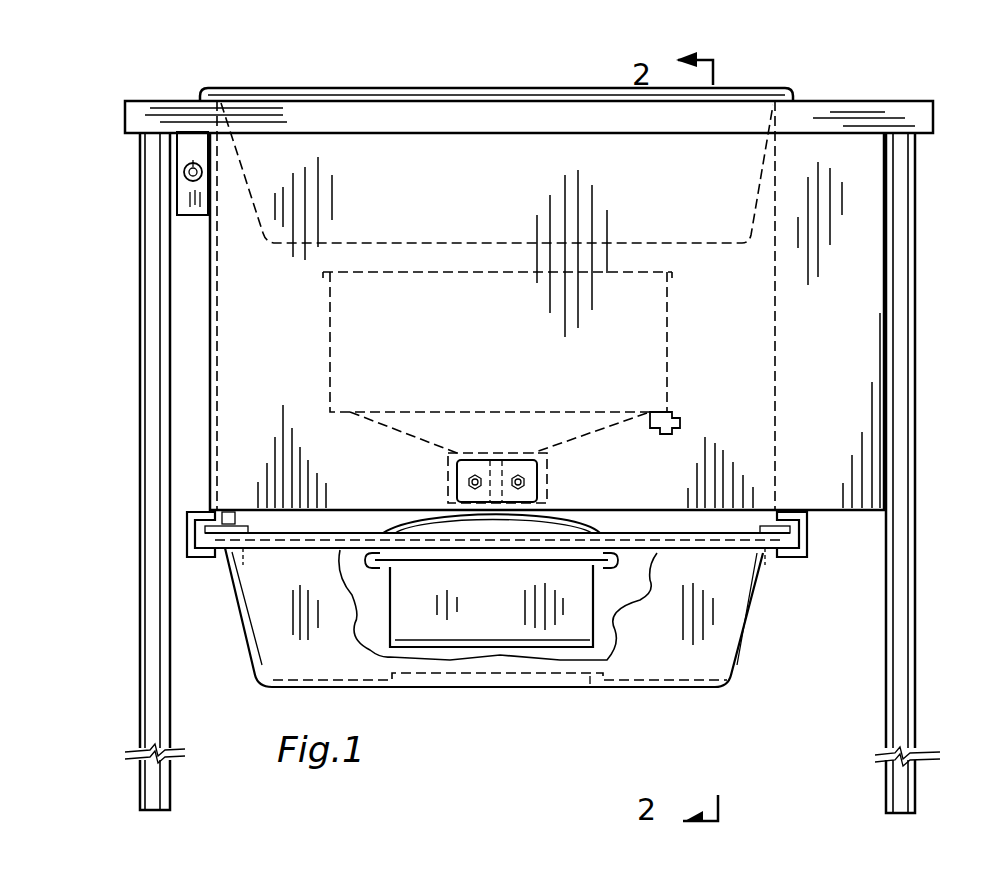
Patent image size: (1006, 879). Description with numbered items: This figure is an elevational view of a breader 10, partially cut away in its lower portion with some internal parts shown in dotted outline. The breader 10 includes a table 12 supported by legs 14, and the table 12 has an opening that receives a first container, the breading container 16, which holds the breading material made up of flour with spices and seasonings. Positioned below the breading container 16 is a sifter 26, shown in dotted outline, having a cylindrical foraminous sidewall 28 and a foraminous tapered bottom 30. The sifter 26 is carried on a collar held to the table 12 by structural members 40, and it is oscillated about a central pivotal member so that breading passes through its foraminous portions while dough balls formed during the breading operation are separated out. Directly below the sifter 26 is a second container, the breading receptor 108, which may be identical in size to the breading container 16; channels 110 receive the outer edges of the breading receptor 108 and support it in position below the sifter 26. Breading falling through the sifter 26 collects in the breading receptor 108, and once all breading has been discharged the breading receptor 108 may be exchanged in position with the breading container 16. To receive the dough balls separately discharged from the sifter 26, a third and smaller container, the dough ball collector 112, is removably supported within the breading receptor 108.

The breader 10 is at (947, 120).
The table 12 is at (888, 118).
The legs 14 is at (160, 385).
The breading container 16 is at (760, 97).
The sifter 26 is at (672, 270).
The cylindrical foraminous sidewall 28 is at (657, 325).
The foraminous tapered bottom 30 is at (583, 437).
The structural members 40 is at (448, 480).
The breading receptor 108 is at (733, 632).
The channels 110 is at (206, 560).
The dough ball collector 112 is at (580, 612).